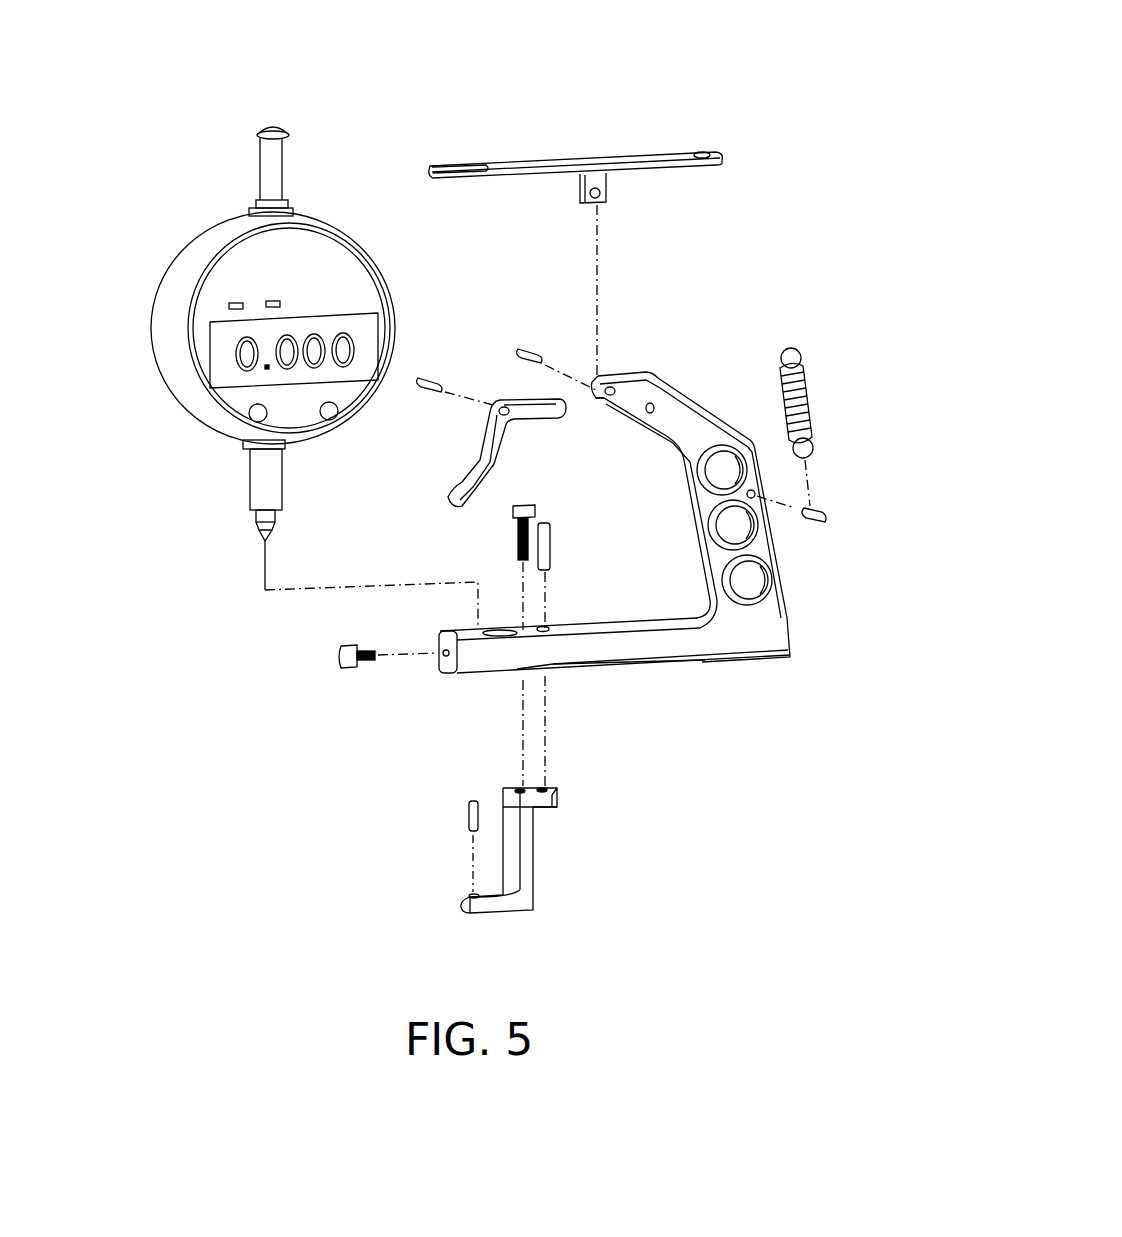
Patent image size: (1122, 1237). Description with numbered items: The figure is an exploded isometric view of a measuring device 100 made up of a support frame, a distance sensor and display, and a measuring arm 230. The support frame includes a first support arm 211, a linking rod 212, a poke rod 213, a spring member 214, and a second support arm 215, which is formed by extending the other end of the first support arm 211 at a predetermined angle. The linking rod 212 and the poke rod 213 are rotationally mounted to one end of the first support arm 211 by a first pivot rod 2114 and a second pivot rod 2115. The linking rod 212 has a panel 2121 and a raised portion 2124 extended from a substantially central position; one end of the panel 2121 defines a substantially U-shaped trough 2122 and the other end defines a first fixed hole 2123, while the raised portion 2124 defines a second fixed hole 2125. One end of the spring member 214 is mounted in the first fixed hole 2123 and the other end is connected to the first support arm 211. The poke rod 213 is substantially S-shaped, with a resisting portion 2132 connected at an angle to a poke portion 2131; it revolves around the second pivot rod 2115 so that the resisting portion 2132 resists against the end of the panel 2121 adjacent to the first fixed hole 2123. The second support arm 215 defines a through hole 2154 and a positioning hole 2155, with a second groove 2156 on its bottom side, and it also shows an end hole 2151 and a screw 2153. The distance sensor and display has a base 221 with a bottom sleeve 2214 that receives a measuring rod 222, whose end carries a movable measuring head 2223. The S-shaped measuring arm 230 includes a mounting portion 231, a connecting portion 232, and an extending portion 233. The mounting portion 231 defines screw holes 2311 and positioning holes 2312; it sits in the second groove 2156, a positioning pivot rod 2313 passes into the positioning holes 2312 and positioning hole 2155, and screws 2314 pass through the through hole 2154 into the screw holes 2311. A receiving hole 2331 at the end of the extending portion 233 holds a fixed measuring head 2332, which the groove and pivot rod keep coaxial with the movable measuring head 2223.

The measuring device 100 is at (531, 56).
The first support arm 211 is at (767, 553).
The linking rod 212 is at (574, 232).
The panel 2121 is at (570, 160).
The U-shaped trough 2122 is at (450, 166).
The first fixed hole 2123 is at (702, 152).
The raised portion 2124 is at (600, 182).
The second fixed hole 2125 is at (600, 195).
The first pivot rod 2114 is at (527, 347).
The second pivot rod 2115 is at (425, 376).
The poke rod 213 is at (485, 426).
The poke portion 2131 is at (488, 456).
The resisting portion 2132 is at (533, 398).
The spring member 214 is at (808, 390).
The second support arm 215 is at (564, 624).
The end hole 2151 is at (443, 665).
The screw 2153 is at (338, 659).
The through hole 2154 is at (517, 629).
The positioning hole 2155 is at (543, 628).
The second groove 2156 is at (547, 666).
The base 221 is at (186, 263).
The measuring rod 222 is at (268, 170).
The sleeve 2214 is at (257, 477).
The movable measuring head 2223 is at (259, 541).
The measuring arm 230 is at (510, 806).
The mounting portion 231 is at (540, 798).
The screw holes 2311 is at (517, 790).
The positioning holes 2312 is at (540, 790).
The positioning pivot rod 2313 is at (551, 528).
The screws 2314 is at (535, 510).
The connecting portion 232 is at (523, 837).
The extending portion 233 is at (468, 904).
The receiving hole 2331 is at (473, 895).
The fixed measuring head 2332 is at (468, 820).